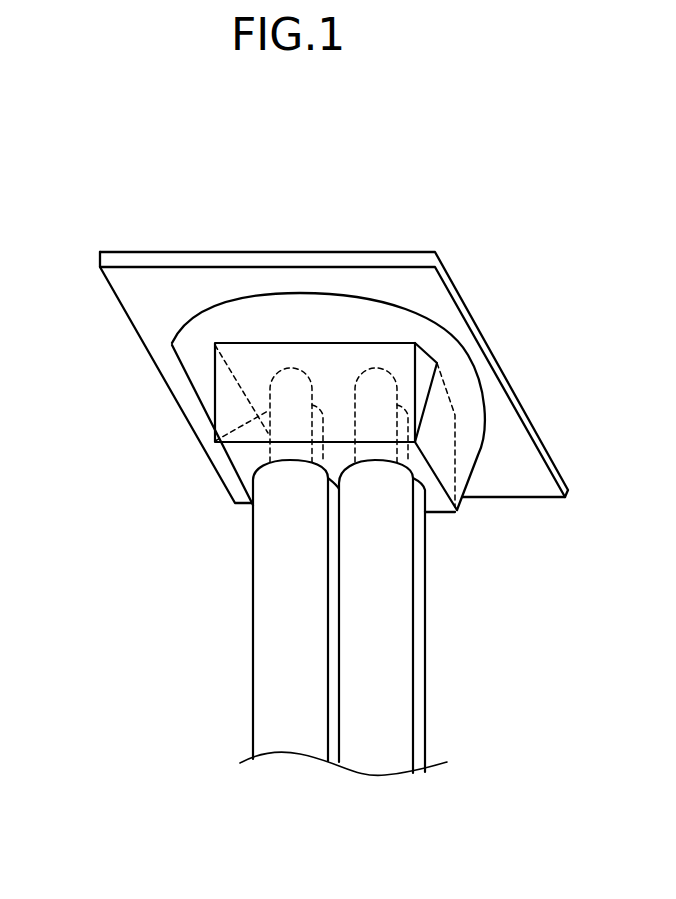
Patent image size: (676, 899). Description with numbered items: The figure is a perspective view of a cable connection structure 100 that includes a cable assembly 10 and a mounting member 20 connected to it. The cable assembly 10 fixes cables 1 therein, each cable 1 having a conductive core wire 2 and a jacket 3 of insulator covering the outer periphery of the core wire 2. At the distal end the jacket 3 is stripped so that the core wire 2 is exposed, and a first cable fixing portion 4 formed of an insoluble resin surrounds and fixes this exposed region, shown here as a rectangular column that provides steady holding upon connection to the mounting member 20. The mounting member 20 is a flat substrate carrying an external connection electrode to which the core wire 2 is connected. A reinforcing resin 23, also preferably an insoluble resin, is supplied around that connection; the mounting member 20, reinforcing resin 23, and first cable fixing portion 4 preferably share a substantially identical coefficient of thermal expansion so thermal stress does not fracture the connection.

The cable connection structure 100 is at (245, 191).
The mounting member 20 is at (100, 259).
The reinforcing resin 23 is at (177, 365).
The first cable fixing portion 4 is at (215, 403).
The core wire 2 is at (213, 445).
The cable assembly 10 is at (189, 618).
The jacket 3 is at (272, 555).
The cable 1 is at (251, 686).